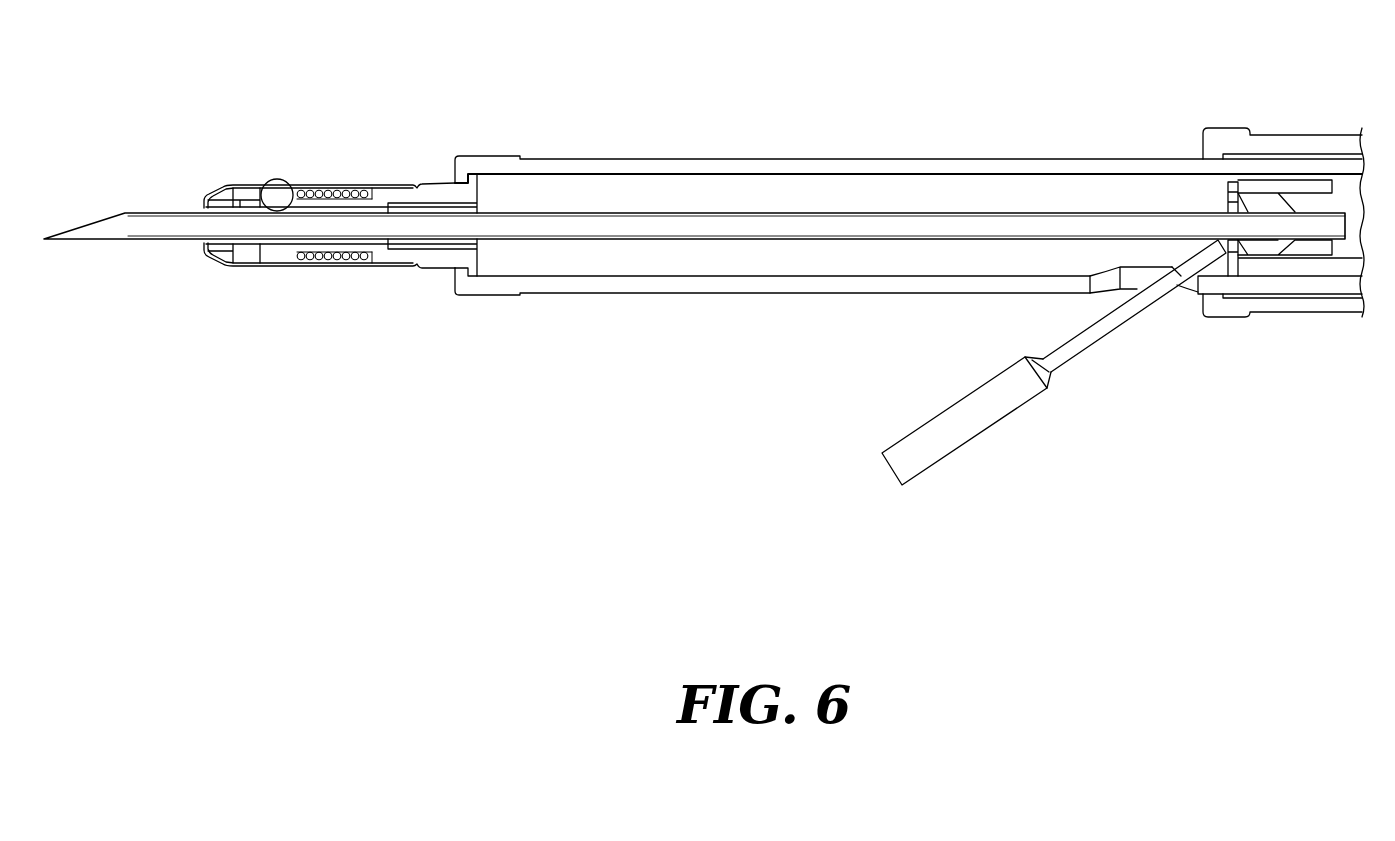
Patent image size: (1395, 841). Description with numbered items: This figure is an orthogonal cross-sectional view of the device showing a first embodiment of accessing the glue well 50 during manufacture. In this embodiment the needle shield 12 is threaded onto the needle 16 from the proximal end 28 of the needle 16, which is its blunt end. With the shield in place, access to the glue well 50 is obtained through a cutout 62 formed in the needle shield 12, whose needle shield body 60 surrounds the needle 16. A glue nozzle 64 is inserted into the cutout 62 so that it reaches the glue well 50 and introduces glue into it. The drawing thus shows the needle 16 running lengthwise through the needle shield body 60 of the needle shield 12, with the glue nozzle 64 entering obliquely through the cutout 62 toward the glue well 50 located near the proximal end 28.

The needle shield 12 is at (793, 140).
The needle 16 is at (163, 212).
The proximal end 28 is at (1340, 212).
The glue well 50 is at (1278, 250).
The needle shield body 60 is at (733, 283).
The cutout 62 is at (1188, 292).
The glue nozzle 64 is at (972, 420).